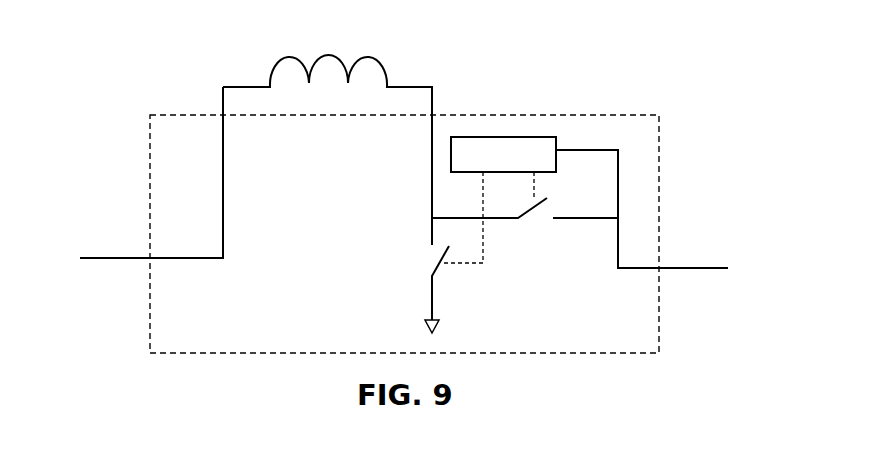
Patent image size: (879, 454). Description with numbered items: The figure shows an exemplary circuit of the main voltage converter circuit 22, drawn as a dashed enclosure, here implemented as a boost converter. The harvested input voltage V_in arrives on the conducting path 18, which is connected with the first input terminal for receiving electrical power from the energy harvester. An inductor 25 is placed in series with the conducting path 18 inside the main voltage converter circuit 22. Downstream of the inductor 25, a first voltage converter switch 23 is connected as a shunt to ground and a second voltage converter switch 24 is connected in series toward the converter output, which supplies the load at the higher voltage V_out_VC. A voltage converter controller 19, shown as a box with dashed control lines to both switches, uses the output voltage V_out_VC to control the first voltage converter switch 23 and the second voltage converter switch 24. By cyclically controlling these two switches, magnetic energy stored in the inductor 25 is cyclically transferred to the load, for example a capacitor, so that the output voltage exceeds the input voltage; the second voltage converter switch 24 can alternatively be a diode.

The conducting path 18 is at (113, 258).
The voltage converter controller 19 is at (516, 137).
The main voltage converter circuit 22 is at (150, 176).
The first voltage converter switch 23 is at (443, 272).
The second voltage converter switch 24 is at (543, 215).
The inductor 25 is at (387, 63).